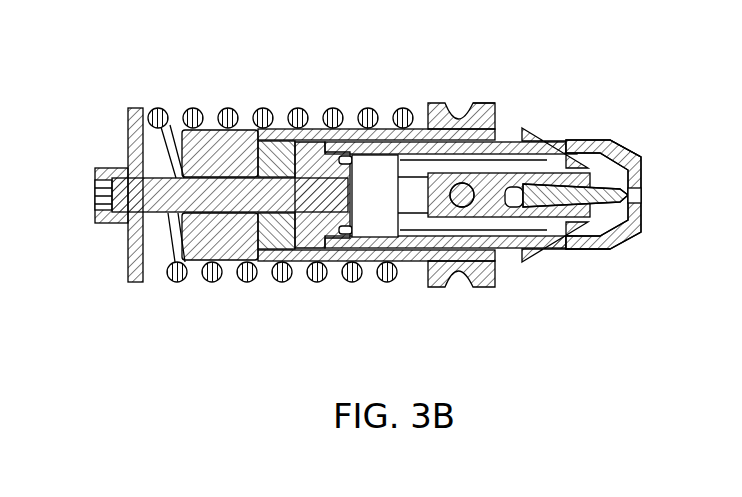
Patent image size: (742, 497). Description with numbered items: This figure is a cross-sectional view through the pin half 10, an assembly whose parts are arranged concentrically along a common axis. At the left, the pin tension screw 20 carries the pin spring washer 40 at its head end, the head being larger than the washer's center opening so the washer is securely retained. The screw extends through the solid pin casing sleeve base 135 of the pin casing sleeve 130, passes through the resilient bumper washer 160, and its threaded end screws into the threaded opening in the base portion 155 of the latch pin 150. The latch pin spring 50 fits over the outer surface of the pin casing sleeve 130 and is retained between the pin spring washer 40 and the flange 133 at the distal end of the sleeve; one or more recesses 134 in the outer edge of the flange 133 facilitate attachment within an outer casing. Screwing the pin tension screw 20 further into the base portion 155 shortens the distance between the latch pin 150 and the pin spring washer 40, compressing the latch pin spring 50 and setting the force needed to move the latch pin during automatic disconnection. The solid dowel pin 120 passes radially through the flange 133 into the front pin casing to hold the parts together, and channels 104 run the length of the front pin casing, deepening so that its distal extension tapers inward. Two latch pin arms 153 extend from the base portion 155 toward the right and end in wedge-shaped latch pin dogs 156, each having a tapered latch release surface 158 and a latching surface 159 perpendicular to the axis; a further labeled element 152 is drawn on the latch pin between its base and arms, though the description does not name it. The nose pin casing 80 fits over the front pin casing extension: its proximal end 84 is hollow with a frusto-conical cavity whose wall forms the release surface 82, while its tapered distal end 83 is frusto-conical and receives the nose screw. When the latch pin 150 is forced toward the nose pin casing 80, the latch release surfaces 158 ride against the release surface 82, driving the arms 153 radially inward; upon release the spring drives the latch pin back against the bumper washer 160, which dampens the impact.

The pin half 10 is at (118, 85).
The pin tension screw 20 is at (120, 190).
The pin spring washer 40 is at (129, 152).
The latch pin spring 50 is at (189, 108).
The nose pin casing 80 is at (642, 225).
The release surface 82 is at (622, 141).
The distal end 83 is at (643, 163).
The proximal end 84 is at (585, 242).
The channels 104 is at (552, 176).
The solid dowel pin 120 is at (465, 207).
The pin casing sleeve 130 is at (275, 129).
The flange 133 is at (484, 104).
The recesses 134 is at (455, 112).
The pin casing sleeve base 135 is at (208, 150).
The latch pin 150 is at (337, 143).
The slider 152 is at (375, 155).
The latch pin arms 153 is at (430, 142).
The base portion 155 is at (308, 283).
The latch pin dogs 156 is at (540, 143).
The latch release surface 158 is at (552, 254).
The latching surface 159 is at (521, 128).
The bumper washer 160 is at (272, 150).